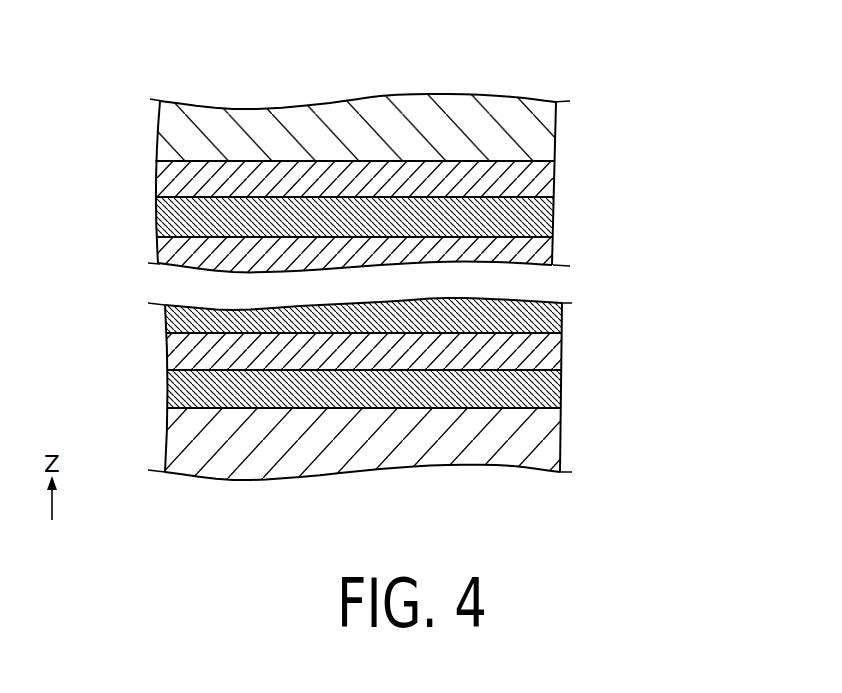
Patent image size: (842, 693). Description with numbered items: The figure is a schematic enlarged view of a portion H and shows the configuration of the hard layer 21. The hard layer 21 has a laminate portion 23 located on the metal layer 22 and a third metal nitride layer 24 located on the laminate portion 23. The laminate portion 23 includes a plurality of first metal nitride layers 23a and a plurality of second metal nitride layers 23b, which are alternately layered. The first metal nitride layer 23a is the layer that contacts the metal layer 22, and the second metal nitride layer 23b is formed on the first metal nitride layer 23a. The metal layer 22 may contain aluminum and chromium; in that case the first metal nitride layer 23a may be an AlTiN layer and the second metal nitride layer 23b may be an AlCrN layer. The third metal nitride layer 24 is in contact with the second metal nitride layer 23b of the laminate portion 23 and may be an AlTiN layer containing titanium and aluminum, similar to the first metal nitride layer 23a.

The portion H is at (147, 64).
The hard layer 21 is at (727, 107).
The metal layer 22 is at (545, 435).
The laminate portion 23 is at (670, 162).
The first metal nitride layer 23a is at (553, 217).
The second metal nitride layer 23b is at (553, 177).
The third metal nitride layer 24 is at (547, 131).